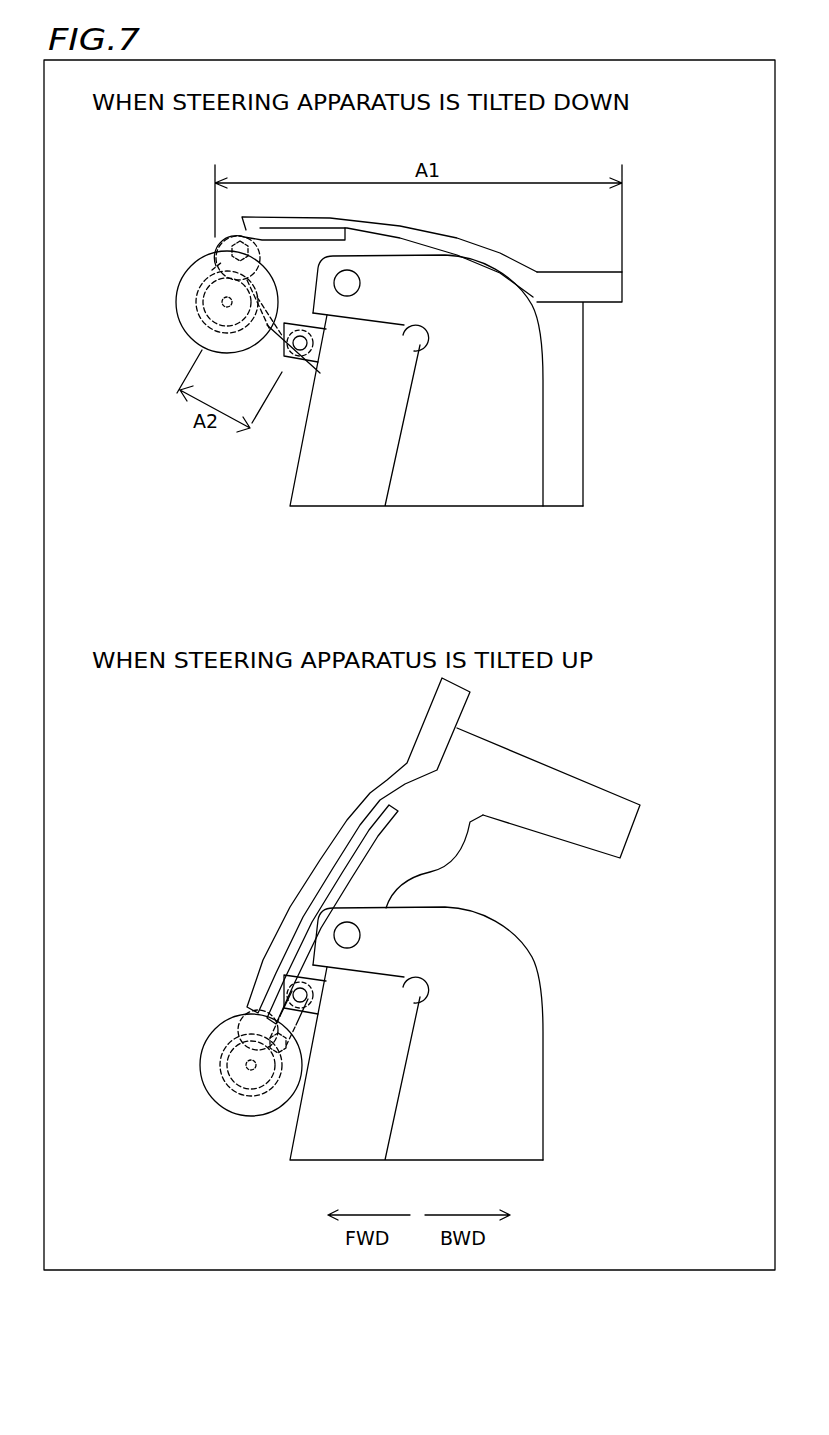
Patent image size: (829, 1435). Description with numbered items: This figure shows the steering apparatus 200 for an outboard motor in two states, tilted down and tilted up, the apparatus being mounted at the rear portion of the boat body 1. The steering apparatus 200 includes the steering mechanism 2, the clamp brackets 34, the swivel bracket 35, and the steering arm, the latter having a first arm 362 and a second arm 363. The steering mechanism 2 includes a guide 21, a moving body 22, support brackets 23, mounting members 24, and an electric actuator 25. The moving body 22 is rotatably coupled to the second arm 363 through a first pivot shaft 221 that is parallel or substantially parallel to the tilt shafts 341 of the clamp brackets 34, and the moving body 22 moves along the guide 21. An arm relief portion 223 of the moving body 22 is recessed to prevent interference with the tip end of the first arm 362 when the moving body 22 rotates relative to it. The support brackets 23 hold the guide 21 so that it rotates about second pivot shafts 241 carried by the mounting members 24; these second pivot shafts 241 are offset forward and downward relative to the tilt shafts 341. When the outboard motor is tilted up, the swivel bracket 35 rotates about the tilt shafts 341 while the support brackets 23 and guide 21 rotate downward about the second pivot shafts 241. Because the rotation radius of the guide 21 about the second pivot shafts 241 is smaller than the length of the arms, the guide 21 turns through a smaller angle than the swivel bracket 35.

The steering apparatus 200 is at (137, 178).
The boat body 1 is at (303, 475).
The steering mechanism 2 is at (140, 352).
The guide 21 is at (205, 308).
The moving body 22 is at (268, 260).
The first pivot shaft 221 is at (240, 248).
The arm relief portion 223 is at (212, 270).
The support brackets 23 is at (270, 345).
The mounting members 24 is at (312, 344).
The second pivot shafts 241 is at (307, 352).
The electric actuator 25 is at (178, 292).
The clamp brackets 34 is at (527, 413).
The tilt shafts 341 is at (347, 283).
The swivel bracket 35 is at (575, 467).
The first arm 362 is at (480, 246).
The second arm 363 is at (213, 252).